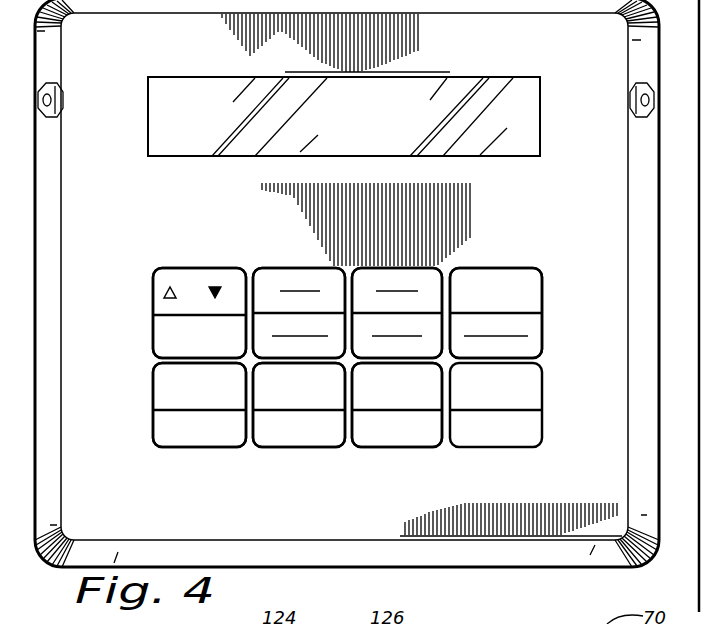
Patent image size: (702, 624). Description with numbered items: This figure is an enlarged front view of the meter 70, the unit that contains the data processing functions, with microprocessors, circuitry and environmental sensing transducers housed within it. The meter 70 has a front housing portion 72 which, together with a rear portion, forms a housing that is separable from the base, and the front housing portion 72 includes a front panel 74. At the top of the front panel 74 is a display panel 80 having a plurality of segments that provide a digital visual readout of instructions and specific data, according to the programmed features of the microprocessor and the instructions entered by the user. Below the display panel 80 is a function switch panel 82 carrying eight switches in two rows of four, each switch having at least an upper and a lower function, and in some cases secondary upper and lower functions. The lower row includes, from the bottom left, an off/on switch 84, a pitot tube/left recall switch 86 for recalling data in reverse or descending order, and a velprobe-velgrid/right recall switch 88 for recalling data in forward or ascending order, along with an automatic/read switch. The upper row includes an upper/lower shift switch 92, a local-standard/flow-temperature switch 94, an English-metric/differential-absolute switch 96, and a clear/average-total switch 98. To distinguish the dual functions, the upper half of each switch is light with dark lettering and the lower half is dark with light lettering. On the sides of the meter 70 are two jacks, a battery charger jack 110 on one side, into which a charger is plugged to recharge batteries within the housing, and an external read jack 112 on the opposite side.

The meter 70 is at (352, 575).
The front housing portion 72 is at (662, 236).
The front panel 74 is at (616, 318).
The display panel 80 is at (496, 98).
The function switch panel 82 is at (545, 328).
The off/on switch 84 is at (153, 373).
The pitot tube/left recall switch 86 is at (297, 436).
The velprobe-velgrid/right recall switch 88 is at (397, 437).
The upper/lower shift switch 92 is at (153, 290).
The local-standard/flow-temperature switch 94 is at (293, 246).
The English-metric/differential-absolute switch 96 is at (400, 246).
The clear/average-total switch 98 is at (535, 246).
The battery charger jack 110 is at (628, 100).
The external read jack 112 is at (66, 98).